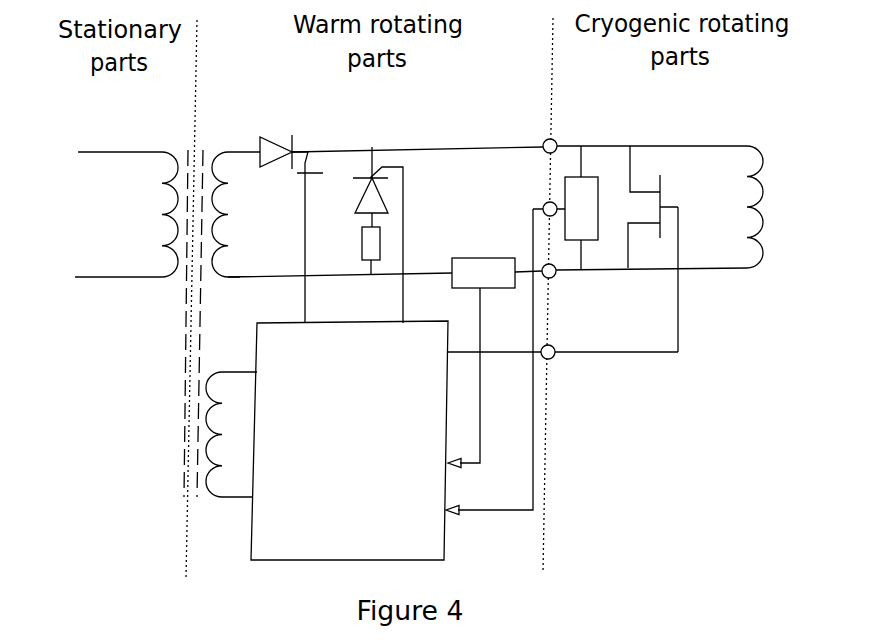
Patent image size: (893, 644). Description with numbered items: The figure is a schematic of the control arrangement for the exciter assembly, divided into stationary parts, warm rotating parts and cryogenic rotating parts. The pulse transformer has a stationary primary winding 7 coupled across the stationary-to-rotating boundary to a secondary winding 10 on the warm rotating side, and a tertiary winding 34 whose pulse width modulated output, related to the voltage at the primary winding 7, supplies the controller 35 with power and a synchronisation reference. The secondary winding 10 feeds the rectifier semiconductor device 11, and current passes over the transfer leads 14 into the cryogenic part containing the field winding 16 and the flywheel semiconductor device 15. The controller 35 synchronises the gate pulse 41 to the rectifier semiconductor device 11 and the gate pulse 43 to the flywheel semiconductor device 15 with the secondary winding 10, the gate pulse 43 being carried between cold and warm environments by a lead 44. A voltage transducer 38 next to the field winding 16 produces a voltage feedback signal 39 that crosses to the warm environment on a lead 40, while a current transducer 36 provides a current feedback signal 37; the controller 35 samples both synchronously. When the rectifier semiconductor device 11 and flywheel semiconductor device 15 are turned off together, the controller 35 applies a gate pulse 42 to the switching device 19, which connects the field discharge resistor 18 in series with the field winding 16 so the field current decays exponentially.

The primary winding 7 is at (150, 232).
The secondary winding 10 is at (236, 240).
The rectifier semiconductor device 11 is at (277, 122).
The gate pulse 41 is at (294, 199).
The field discharge resistor 18 is at (352, 236).
The switching device 19 is at (392, 190).
The gate pulse 42 is at (416, 208).
The lead 40 is at (536, 202).
The transfer leads 14 is at (562, 136).
The voltage transducer 38 is at (603, 178).
The flywheel semiconductor device 15 is at (650, 182).
The field winding 16 is at (752, 188).
The gate pulse 43 is at (690, 291).
The lead 44 is at (566, 361).
The current transducer 36 is at (505, 300).
The voltage feedback signal 39 is at (540, 425).
The current feedback signal 37 is at (494, 443).
The tertiary winding 34 is at (195, 421).
The controller 35 is at (242, 530).